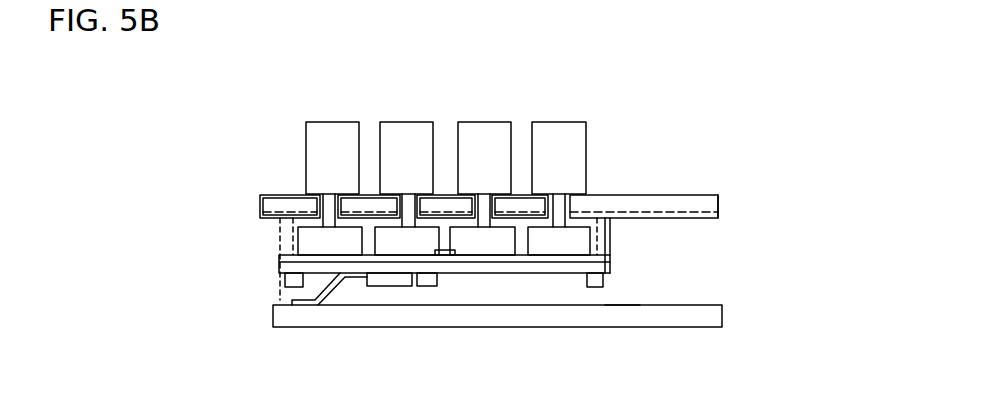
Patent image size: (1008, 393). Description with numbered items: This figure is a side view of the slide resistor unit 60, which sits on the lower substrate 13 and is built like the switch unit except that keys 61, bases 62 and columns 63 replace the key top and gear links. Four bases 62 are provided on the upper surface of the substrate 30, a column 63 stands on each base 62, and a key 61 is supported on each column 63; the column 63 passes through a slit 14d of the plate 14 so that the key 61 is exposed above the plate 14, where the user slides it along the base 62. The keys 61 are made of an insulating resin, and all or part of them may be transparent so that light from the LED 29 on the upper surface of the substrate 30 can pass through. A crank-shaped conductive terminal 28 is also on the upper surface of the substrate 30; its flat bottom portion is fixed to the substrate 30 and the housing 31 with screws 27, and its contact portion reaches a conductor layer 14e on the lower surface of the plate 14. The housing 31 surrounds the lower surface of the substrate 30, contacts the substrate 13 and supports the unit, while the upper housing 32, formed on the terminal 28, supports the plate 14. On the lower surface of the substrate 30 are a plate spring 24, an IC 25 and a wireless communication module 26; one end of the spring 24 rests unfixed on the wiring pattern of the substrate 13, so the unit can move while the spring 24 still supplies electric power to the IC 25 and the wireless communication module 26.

The substrate 13 is at (318, 322).
The plate 14 is at (268, 206).
The slit 14d is at (322, 197).
The conductor layer 14e is at (705, 219).
The spring 24 is at (313, 291).
The IC 25 is at (387, 286).
The wireless communication module 26 is at (421, 286).
The screws 27 is at (287, 283).
The terminal 28 is at (612, 221).
The LED 29 is at (453, 257).
The substrate 30 is at (287, 268).
The housing 31 is at (608, 294).
The housing 32 is at (279, 228).
The slide resistor unit 60 is at (448, 172).
The keys 61 is at (331, 121).
The bases 62 is at (303, 250).
The columns 63 is at (566, 205).